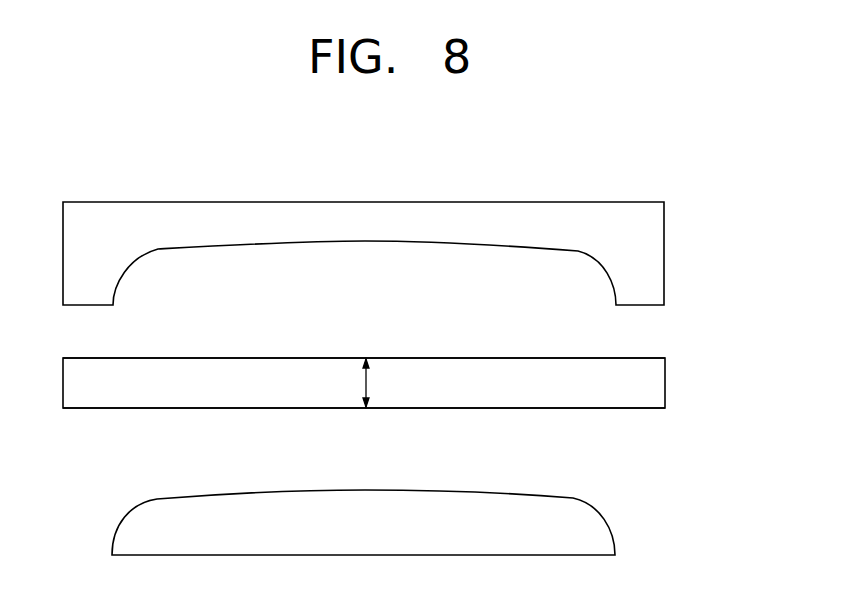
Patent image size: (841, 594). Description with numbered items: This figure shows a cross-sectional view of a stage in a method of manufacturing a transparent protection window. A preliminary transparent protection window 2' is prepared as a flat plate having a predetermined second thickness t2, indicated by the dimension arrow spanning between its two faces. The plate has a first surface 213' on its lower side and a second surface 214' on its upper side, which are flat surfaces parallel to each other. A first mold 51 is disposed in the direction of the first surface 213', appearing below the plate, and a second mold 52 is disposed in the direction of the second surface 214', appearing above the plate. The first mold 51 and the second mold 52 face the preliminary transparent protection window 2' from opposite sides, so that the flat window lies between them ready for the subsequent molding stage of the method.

The second mold 52 is at (653, 259).
The first mold 51 is at (600, 532).
The preliminary transparent protection window 2' is at (417, 378).
The second surface 214' is at (364, 341).
The first surface 213' is at (364, 423).
The second thickness t2 is at (379, 383).